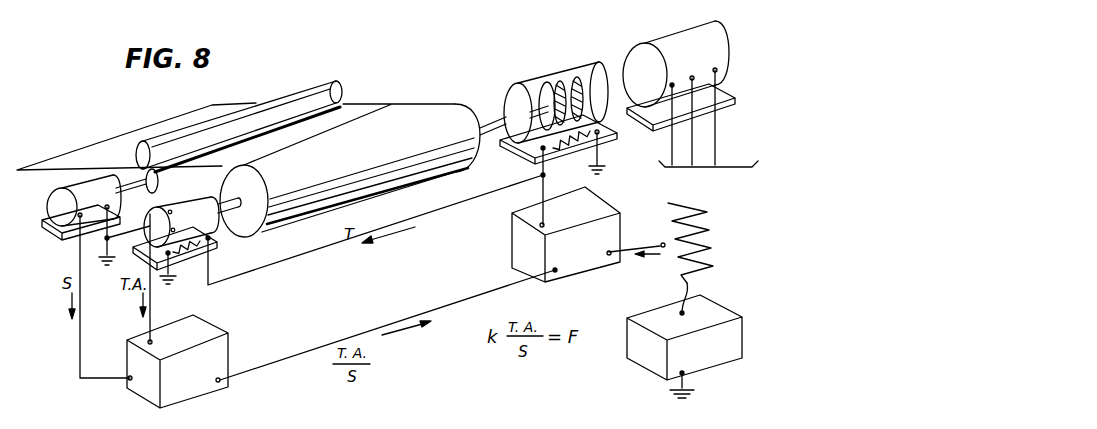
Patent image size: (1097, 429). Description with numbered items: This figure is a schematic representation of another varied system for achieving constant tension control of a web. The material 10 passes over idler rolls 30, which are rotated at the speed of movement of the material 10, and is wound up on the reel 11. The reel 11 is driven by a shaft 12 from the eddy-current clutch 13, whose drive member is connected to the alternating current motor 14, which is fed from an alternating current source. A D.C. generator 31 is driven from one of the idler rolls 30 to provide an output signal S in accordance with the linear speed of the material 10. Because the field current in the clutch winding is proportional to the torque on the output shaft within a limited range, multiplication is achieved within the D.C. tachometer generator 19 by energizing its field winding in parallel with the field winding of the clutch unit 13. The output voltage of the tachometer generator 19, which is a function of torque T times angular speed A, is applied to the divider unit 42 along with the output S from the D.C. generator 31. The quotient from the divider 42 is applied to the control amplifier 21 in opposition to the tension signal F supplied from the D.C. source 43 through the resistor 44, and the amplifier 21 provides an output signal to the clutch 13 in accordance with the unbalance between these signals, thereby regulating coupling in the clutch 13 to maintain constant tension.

The material 10 is at (368, 112).
The reel 11 is at (438, 168).
The shaft 12 is at (498, 112).
The eddy-current clutch 13 is at (571, 70).
The motor 14 is at (708, 42).
The tachometer generator 19 is at (211, 220).
The control amplifier 21 is at (523, 232).
The idler rolls 30 is at (140, 168).
The D.C. generator 31 is at (55, 197).
The divider circuit 42 is at (217, 348).
The D.C. source 43 is at (738, 303).
The resistor 44 is at (708, 230).